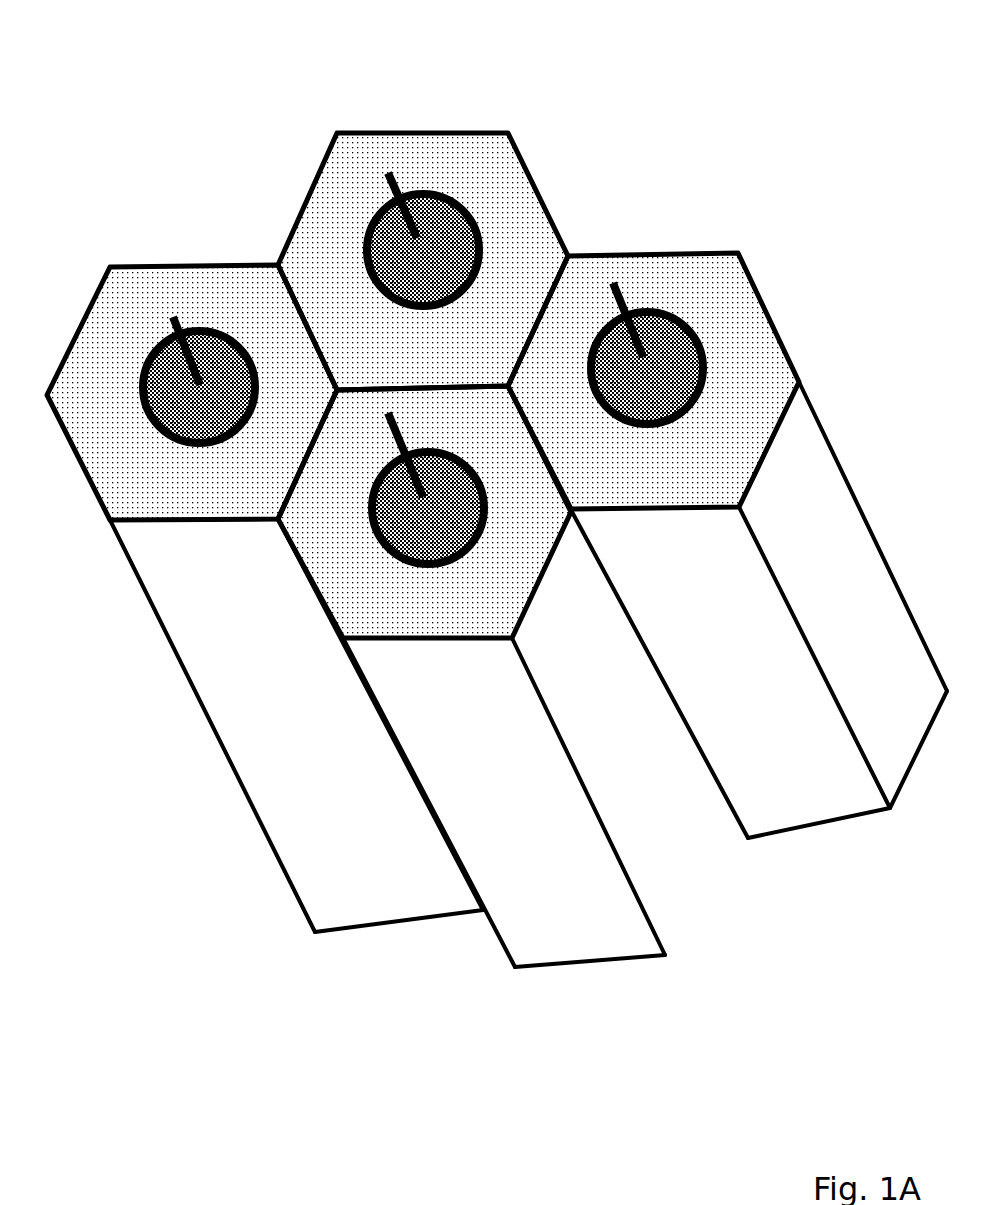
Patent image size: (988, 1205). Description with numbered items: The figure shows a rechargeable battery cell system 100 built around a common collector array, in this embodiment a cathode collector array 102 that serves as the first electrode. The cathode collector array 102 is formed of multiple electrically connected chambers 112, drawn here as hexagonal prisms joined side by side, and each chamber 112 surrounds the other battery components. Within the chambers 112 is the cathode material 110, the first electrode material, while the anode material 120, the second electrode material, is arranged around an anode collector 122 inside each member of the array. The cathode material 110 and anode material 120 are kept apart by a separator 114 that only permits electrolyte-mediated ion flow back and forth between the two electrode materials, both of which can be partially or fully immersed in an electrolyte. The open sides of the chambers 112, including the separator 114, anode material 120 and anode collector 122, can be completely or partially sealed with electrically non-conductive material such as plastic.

The rechargeable battery cell system 100 is at (137, 82).
The cathode collector array 102 is at (177, 560).
The cathode material 110 is at (128, 307).
The chambers 112 is at (682, 238).
The separator 114 is at (487, 238).
The anode material 120 is at (213, 358).
The anode collector 122 is at (402, 188).